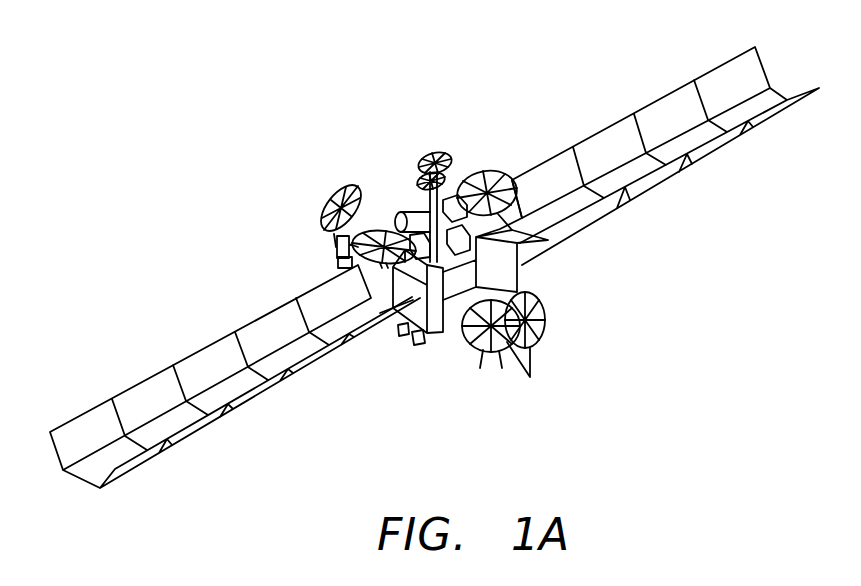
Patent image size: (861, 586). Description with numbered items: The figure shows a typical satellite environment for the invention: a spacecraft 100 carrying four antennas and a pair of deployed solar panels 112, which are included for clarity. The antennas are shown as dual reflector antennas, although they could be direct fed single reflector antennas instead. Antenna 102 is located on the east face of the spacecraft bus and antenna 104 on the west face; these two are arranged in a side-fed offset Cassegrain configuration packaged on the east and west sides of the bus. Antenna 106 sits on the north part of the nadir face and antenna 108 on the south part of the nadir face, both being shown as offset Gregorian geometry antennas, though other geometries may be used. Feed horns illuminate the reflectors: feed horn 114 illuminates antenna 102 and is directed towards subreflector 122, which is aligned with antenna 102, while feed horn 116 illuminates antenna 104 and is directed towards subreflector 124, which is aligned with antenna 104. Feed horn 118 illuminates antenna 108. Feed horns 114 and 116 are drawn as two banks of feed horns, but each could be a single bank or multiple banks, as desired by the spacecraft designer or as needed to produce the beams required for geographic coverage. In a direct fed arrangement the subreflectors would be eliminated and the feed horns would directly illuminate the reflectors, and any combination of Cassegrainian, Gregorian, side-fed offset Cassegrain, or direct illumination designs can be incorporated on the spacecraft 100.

The spacecraft 100 is at (458, 75).
The antenna 102 is at (483, 350).
The antenna 104 is at (341, 274).
The antenna 106 is at (474, 162).
The antenna 108 is at (346, 249).
The solar panels 112 is at (100, 400).
The feed horn 114 is at (562, 230).
The feed horn 116 is at (437, 208).
The feed horn 118 is at (390, 272).
The subreflector 122 is at (540, 293).
The subreflector 124 is at (337, 193).